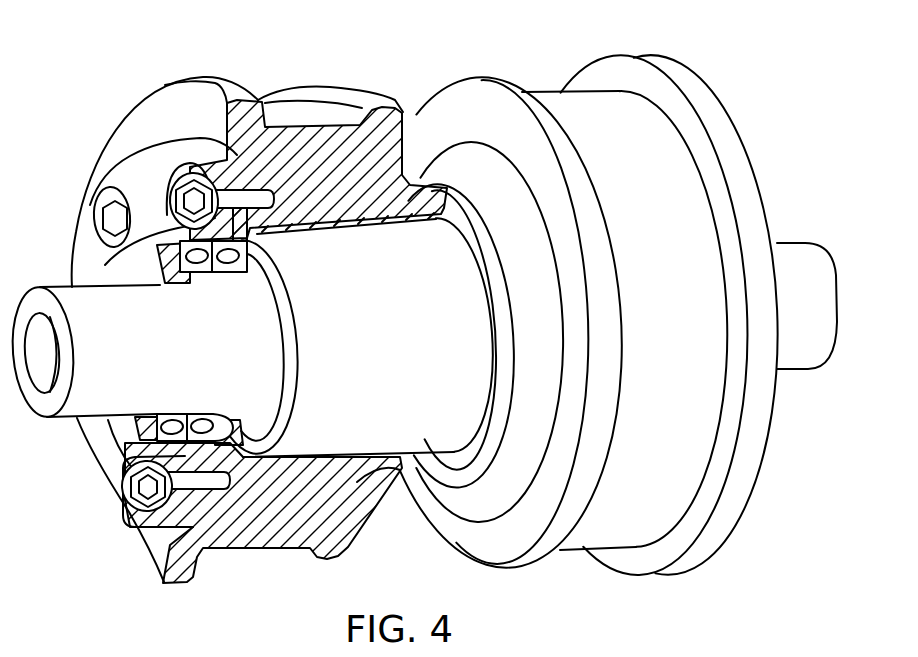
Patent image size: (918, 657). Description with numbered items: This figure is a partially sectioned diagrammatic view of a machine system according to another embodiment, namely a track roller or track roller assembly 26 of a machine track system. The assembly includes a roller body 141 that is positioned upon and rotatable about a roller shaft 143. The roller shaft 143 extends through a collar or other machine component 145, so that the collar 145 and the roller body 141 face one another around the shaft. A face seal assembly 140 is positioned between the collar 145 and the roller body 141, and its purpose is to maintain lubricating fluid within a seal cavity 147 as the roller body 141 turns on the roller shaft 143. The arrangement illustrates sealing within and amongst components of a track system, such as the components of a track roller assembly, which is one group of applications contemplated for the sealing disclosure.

The track roller assembly 26 is at (698, 46).
The roller body 141 is at (292, 99).
The roller shaft 143 is at (62, 287).
The collar 145 is at (118, 171).
The seal cavity 147 is at (197, 288).
The face seal assembly 140 is at (220, 284).